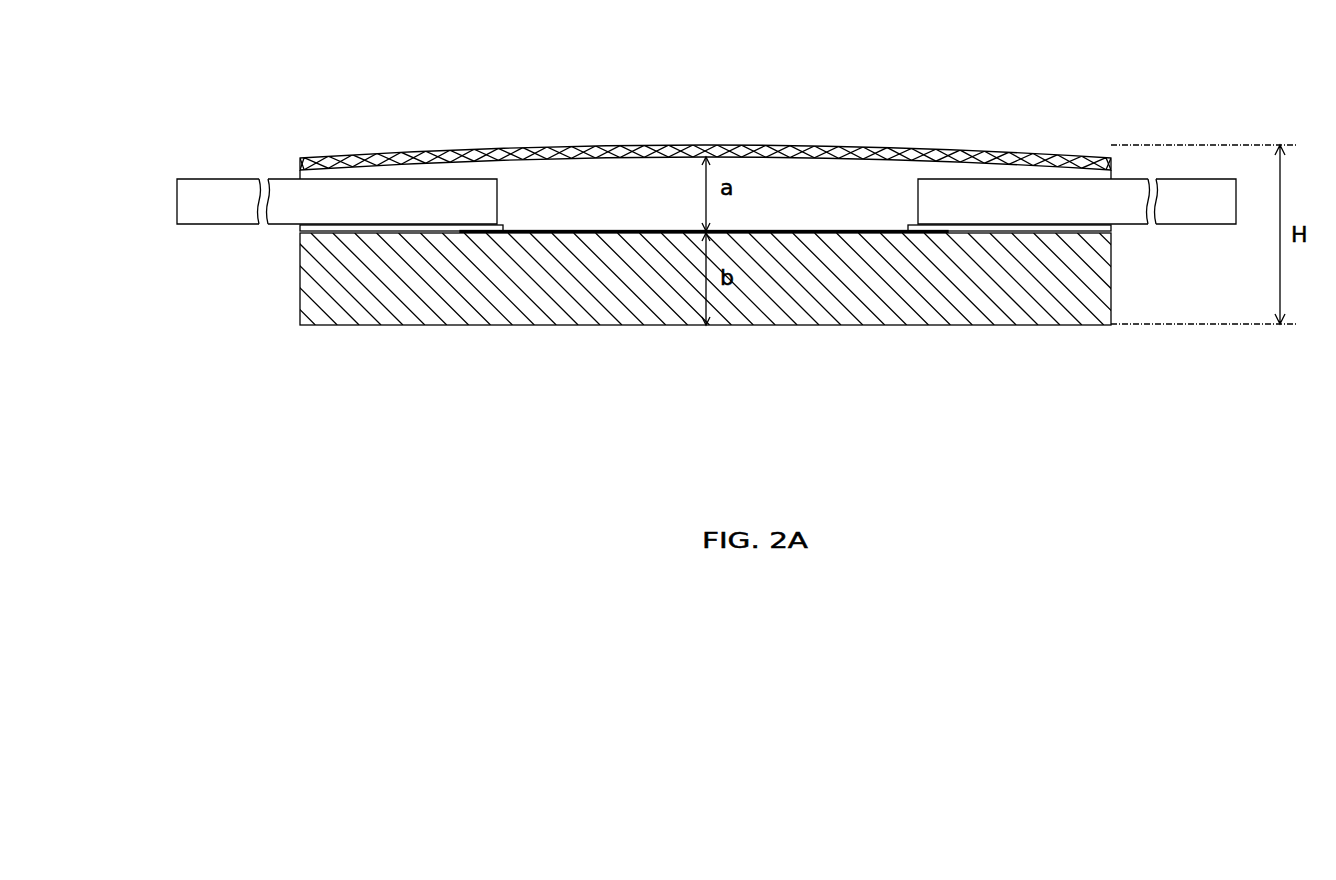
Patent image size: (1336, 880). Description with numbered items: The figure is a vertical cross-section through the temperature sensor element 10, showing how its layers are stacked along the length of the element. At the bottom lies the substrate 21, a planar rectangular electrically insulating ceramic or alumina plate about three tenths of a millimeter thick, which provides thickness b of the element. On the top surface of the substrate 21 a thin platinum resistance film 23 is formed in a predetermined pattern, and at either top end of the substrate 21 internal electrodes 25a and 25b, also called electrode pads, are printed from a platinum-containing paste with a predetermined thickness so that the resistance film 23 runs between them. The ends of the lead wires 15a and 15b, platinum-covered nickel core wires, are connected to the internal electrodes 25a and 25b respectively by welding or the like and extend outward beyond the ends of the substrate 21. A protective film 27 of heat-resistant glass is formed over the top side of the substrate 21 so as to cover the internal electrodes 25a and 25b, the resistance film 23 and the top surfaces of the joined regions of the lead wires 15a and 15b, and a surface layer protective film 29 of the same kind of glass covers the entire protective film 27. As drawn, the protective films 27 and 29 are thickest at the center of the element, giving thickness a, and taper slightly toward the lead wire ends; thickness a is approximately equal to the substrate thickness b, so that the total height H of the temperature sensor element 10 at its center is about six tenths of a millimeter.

The temperature sensor element 10 is at (902, 108).
The lead wire 15a is at (1208, 212).
The lead wire 15b is at (230, 187).
The substrate 21 is at (667, 305).
The resistance film 23 is at (600, 231).
The internal electrode 25a is at (1113, 232).
The internal electrode 25b is at (300, 232).
The protective film 27 is at (770, 168).
The surface layer protective film 29 is at (663, 146).